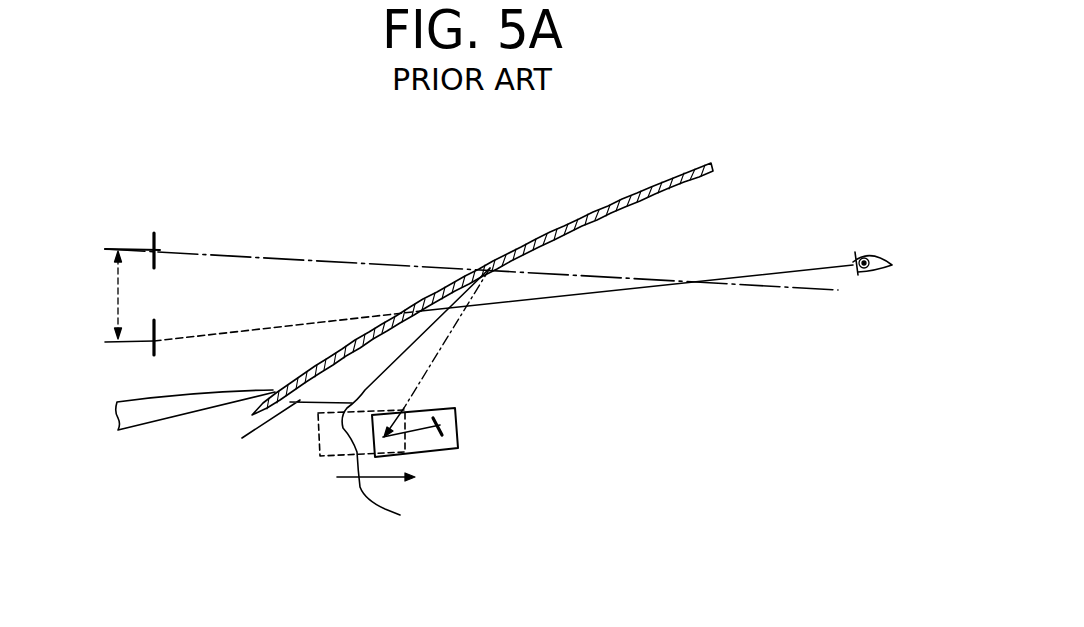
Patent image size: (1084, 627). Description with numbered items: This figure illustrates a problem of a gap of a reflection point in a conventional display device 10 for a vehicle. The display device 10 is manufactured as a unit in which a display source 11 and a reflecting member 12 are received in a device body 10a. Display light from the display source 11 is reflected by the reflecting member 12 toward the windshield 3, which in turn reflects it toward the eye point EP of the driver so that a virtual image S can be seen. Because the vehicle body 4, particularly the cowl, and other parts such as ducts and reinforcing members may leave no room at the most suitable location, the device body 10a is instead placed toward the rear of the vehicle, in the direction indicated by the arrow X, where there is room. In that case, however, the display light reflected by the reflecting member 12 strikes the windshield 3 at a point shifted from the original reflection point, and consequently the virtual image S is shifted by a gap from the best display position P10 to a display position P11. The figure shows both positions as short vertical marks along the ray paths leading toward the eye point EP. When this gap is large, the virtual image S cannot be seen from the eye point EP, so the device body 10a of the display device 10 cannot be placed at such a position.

The windshield 3 is at (638, 182).
The vehicle body 4 is at (382, 505).
The display device 10 is at (470, 450).
The device body 10a is at (458, 418).
The display source 11 is at (443, 410).
The reflecting member 12 is at (342, 434).
The virtual image S is at (166, 224).
The eye point EP is at (888, 243).
The display position P11 is at (152, 245).
The best display position P10 is at (153, 350).
The arrow X is at (335, 478).